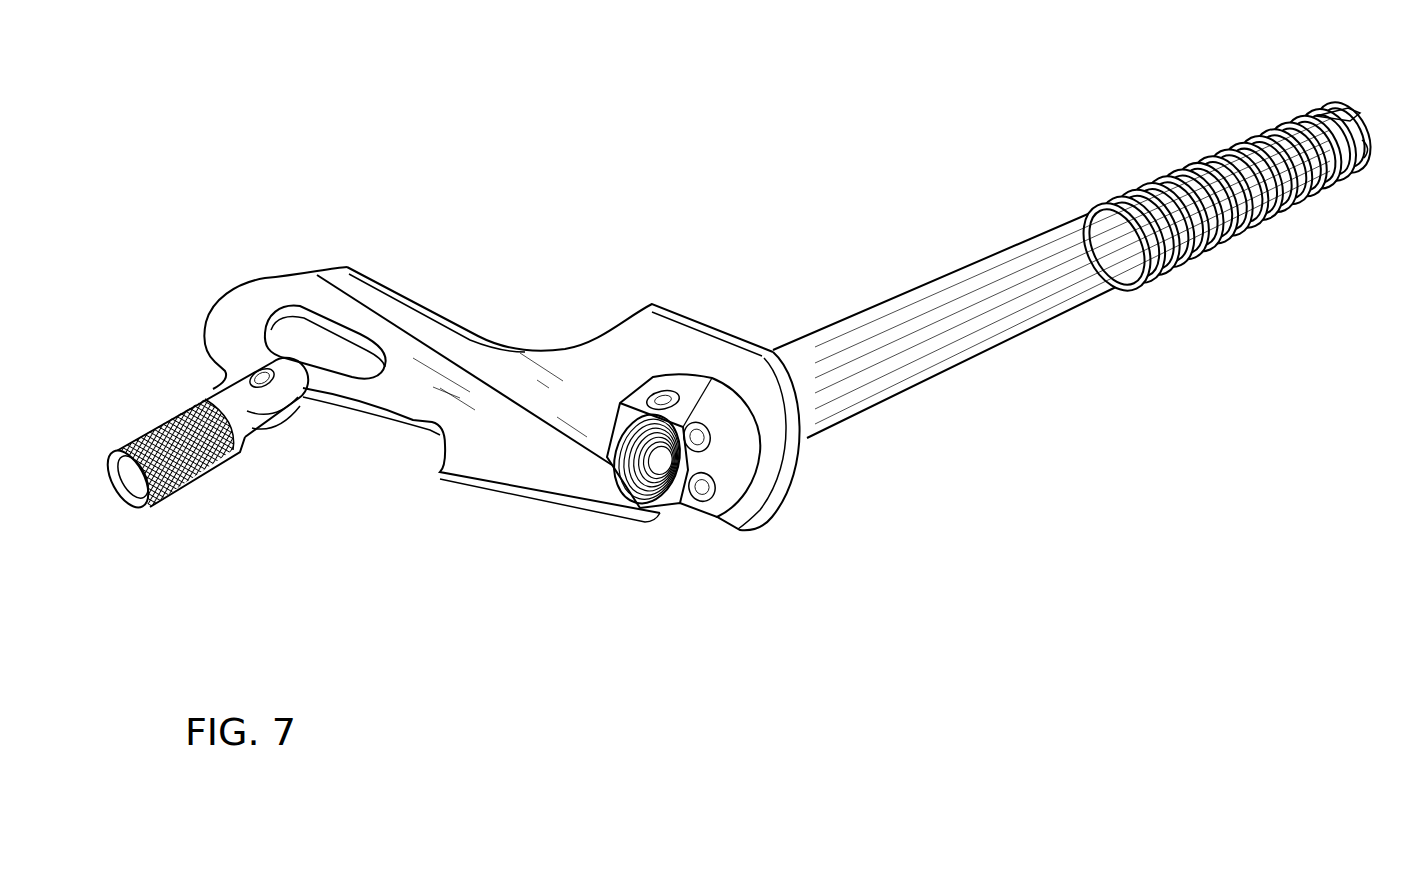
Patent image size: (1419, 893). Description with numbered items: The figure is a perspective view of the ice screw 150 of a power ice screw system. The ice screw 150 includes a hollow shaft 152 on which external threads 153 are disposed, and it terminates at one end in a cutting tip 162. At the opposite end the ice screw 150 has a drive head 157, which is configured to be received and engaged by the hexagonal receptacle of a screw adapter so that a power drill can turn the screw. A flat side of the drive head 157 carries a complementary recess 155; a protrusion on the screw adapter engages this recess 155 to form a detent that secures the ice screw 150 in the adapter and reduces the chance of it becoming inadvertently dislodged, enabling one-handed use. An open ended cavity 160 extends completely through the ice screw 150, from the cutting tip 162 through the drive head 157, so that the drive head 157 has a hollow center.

The ice screw 150 is at (1134, 565).
The hollow shaft 152 is at (935, 284).
The external threads 153 is at (1213, 252).
The recess 155 is at (698, 423).
The drive head 157 is at (668, 512).
The open ended cavity 160 is at (626, 465).
The cutting tip 162 is at (1373, 146).